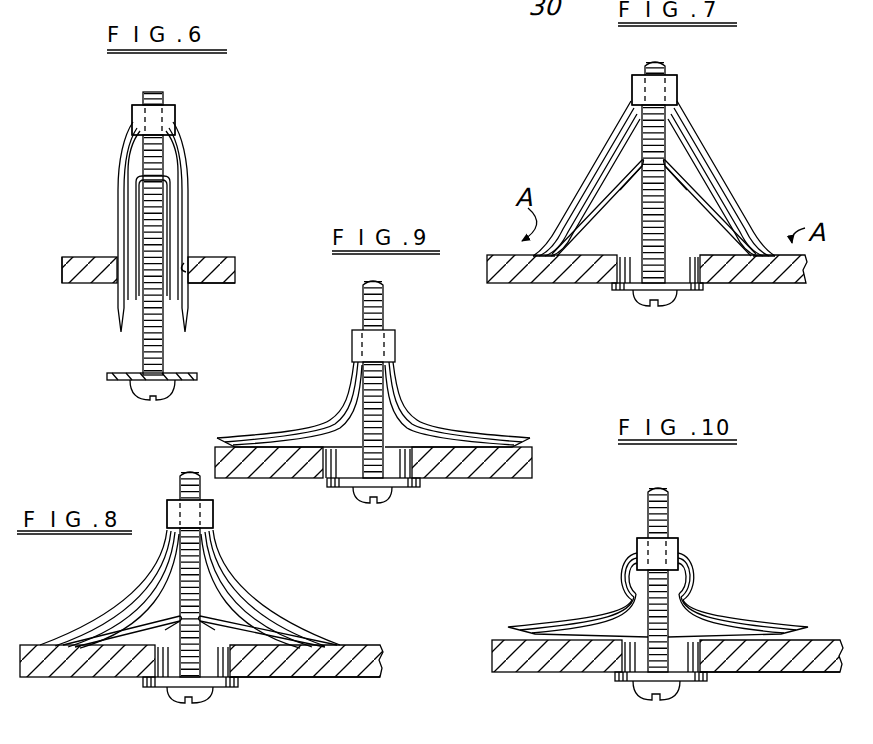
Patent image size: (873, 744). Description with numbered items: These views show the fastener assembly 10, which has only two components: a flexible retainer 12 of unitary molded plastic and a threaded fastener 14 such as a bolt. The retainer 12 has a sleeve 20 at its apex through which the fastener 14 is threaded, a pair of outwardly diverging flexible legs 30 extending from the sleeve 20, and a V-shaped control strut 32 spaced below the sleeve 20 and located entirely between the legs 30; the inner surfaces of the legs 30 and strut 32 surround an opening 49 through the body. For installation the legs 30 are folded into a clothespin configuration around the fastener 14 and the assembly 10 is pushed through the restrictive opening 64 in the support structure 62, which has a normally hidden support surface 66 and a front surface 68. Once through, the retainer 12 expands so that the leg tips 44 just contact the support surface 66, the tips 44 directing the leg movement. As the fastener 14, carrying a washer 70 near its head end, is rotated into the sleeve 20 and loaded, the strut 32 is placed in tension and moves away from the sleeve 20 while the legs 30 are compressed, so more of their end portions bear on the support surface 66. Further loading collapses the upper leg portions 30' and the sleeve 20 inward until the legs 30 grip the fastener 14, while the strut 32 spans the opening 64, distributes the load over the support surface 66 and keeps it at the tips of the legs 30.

In FIG. 6, the fastener assembly 10 is at (110, 232).
In FIG. 7, the fastener assembly 10 is at (714, 135).
In FIG. 8, the fastener assembly 10 is at (98, 607).
In FIG. 10, the fastener assembly 10 is at (601, 598).
In FIG. 6, the flexible retainer 12 is at (118, 170).
In FIG. 6, the threaded fastener 14 is at (160, 341).
In FIG. 7, the threaded fastener 14 is at (668, 68).
In FIG. 9, the threaded fastener 14 is at (384, 300).
In FIG. 8, the threaded fastener 14 is at (180, 483).
In FIG. 10, the threaded fastener 14 is at (669, 502).
In FIG. 6, the sleeve 20 is at (153, 120).
In FIG. 7, the sleeve 20 is at (670, 90).
In FIG. 9, the sleeve 20 is at (386, 344).
In FIG. 8, the sleeve 20 is at (201, 518).
In FIG. 10, the sleeve 20 is at (681, 548).
In FIG. 7, the flexible legs 30 is at (678, 178).
In FIG. 10, the flexible legs 30 is at (642, 607).
In FIG. 9, the upper leg portions 30' is at (373, 404).
In FIG. 8, the upper leg portions 30' is at (190, 589).
In FIG. 10, the upper leg portions 30' is at (659, 577).
In FIG. 6, the control strut 32 is at (153, 238).
In FIG. 7, the control strut 32 is at (654, 208).
In FIG. 9, the control strut 32 is at (328, 466).
In FIG. 8, the control strut 32 is at (133, 651).
In FIG. 10, the control strut 32 is at (600, 662).
In FIG. 7, the leg tips 44 is at (528, 284).
In FIG. 7, the opening 49 is at (694, 170).
In FIG. 8, the opening 49 is at (222, 600).
In FIG. 6, the support structure 62 is at (72, 276).
In FIG. 6, the restrictive opening 64 is at (182, 260).
In FIG. 7, the restrictive opening 64 is at (680, 262).
In FIG. 9, the restrictive opening 64 is at (408, 472).
In FIG. 8, the restrictive opening 64 is at (220, 668).
In FIG. 10, the restrictive opening 64 is at (690, 682).
In FIG. 6, the support surface 66 is at (228, 258).
In FIG. 7, the support surface 66 is at (505, 256).
In FIG. 9, the support surface 66 is at (373, 462).
In FIG. 8, the support surface 66 is at (366, 645).
In FIG. 10, the support surface 66 is at (821, 641).
In FIG. 6, the front surface 68 is at (210, 284).
In FIG. 8, the front surface 68 is at (330, 678).
In FIG. 10, the front surface 68 is at (780, 673).
In FIG. 6, the washer 70 is at (184, 382).
In FIG. 8, the washer 70 is at (160, 689).